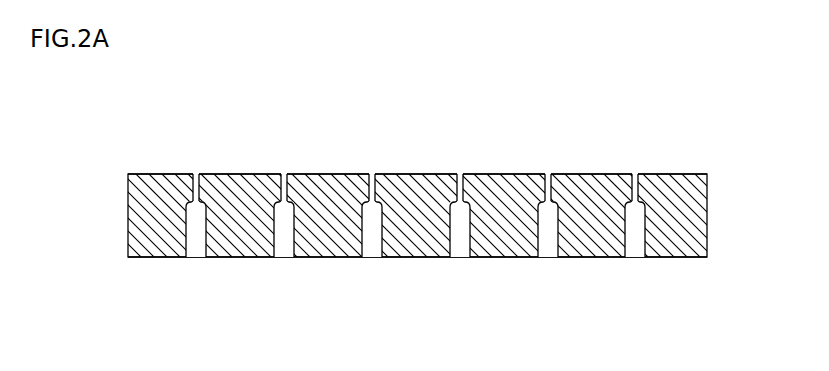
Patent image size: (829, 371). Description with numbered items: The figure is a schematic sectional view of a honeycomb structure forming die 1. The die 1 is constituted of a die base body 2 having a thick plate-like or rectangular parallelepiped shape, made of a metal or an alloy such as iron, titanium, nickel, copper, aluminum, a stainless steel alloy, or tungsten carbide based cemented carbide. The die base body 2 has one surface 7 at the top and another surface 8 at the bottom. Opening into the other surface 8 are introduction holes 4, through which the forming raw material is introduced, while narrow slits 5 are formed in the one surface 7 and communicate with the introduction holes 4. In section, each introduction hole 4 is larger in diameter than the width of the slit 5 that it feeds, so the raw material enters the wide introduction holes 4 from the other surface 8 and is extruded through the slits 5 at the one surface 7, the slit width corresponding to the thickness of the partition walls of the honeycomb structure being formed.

The die 1 is at (654, 119).
The die base body 2 is at (152, 213).
The introduction hole 4 is at (198, 228).
The slit 5 is at (195, 176).
The one surface 7 is at (404, 174).
The other surface 8 is at (415, 258).